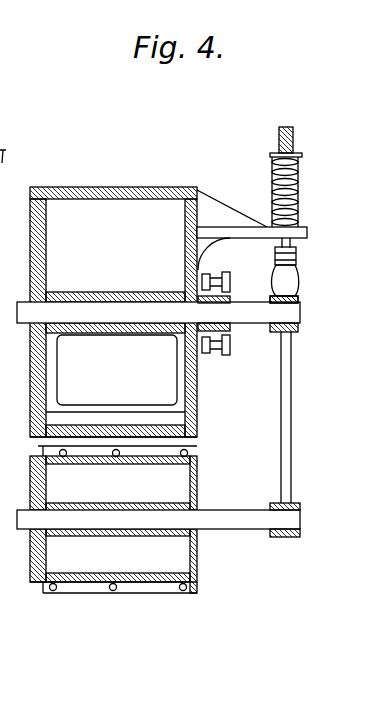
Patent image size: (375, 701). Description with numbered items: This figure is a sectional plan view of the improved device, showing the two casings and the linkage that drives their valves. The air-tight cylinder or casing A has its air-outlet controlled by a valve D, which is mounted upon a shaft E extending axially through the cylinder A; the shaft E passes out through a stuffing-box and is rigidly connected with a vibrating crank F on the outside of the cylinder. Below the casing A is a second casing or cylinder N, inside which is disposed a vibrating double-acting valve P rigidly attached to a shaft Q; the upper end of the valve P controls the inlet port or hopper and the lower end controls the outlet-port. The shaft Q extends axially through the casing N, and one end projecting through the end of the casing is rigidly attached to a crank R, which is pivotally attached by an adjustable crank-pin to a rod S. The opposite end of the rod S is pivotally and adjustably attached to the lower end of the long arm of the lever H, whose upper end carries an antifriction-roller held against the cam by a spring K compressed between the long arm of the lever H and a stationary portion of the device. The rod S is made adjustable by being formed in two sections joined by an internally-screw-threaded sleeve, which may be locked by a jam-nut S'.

The air-tight cylinder or casing A is at (112, 187).
The valve D is at (78, 293).
The shaft E is at (132, 312).
The vibrating crank F is at (298, 300).
The lever H is at (293, 133).
The spring K is at (298, 168).
The second casing or cylinder N is at (198, 479).
The vibrating double-acting valve P is at (152, 505).
The shaft Q is at (237, 523).
The crank R is at (300, 507).
The rod S is at (272, 346).
The jam-nut S' is at (308, 252).